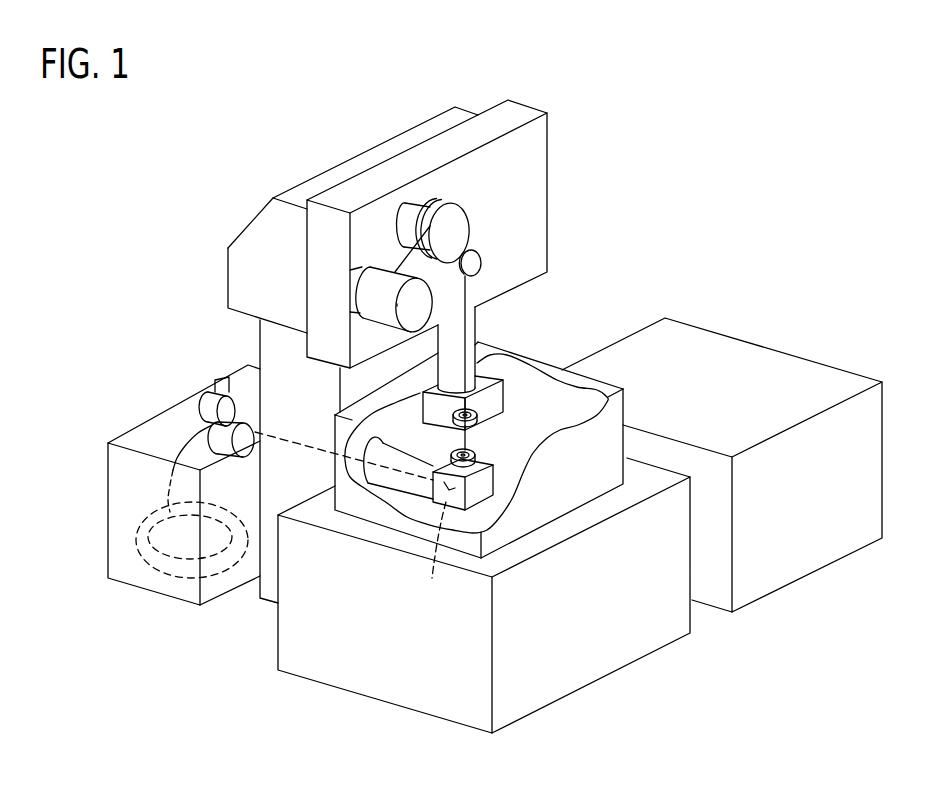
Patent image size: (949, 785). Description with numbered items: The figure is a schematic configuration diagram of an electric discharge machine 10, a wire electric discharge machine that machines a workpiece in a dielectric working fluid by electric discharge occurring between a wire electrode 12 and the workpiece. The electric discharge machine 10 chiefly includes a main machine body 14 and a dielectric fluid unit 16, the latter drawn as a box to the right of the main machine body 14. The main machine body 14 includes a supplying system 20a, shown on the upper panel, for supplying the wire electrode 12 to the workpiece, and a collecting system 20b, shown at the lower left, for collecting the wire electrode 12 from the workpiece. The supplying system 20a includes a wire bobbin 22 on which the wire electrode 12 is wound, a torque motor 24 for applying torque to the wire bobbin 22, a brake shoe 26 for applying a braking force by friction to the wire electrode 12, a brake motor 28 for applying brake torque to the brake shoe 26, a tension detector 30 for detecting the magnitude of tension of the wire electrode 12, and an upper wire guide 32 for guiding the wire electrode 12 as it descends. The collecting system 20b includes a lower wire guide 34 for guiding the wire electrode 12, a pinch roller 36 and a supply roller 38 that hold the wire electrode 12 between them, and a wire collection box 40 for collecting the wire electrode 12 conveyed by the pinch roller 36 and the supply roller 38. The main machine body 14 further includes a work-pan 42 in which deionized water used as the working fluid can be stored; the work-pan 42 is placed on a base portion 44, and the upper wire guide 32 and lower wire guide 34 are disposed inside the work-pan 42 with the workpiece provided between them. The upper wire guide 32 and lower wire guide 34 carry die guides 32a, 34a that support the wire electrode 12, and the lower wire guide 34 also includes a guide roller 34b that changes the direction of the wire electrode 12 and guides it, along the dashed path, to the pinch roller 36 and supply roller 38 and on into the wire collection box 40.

The electric discharge machine 10 is at (76, 166).
The wire electrode 12 is at (467, 292).
The main machine body 14 is at (228, 232).
The dielectric fluid unit 16 is at (868, 447).
The supplying system 20a is at (489, 214).
The collecting system 20b is at (153, 401).
The wire bobbin 22 is at (380, 287).
The torque motor 24 is at (355, 289).
The brake shoe 26 is at (455, 221).
The brake motor 28 is at (411, 221).
The tension detector 30 is at (477, 268).
The upper wire guide 32 is at (480, 385).
The die guide 32a is at (477, 412).
The lower wire guide 34 is at (485, 486).
The die guide 34a is at (472, 457).
The guide roller 34b is at (447, 554).
The pinch roller 36 is at (225, 393).
The supply roller 38 is at (247, 447).
The wire collection box 40 is at (118, 488).
The work-pan 42 is at (589, 388).
The base portion 44 is at (620, 653).